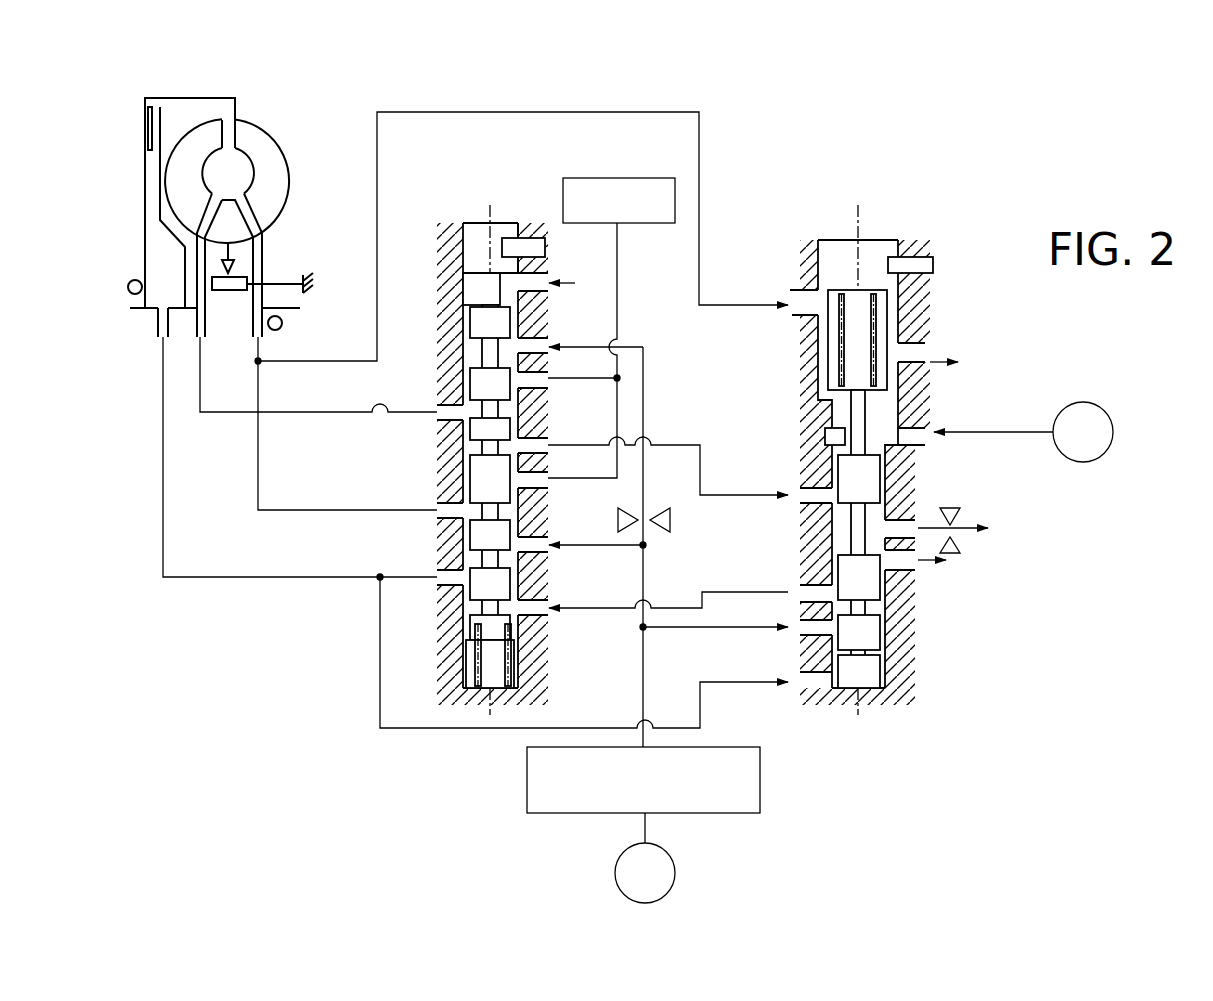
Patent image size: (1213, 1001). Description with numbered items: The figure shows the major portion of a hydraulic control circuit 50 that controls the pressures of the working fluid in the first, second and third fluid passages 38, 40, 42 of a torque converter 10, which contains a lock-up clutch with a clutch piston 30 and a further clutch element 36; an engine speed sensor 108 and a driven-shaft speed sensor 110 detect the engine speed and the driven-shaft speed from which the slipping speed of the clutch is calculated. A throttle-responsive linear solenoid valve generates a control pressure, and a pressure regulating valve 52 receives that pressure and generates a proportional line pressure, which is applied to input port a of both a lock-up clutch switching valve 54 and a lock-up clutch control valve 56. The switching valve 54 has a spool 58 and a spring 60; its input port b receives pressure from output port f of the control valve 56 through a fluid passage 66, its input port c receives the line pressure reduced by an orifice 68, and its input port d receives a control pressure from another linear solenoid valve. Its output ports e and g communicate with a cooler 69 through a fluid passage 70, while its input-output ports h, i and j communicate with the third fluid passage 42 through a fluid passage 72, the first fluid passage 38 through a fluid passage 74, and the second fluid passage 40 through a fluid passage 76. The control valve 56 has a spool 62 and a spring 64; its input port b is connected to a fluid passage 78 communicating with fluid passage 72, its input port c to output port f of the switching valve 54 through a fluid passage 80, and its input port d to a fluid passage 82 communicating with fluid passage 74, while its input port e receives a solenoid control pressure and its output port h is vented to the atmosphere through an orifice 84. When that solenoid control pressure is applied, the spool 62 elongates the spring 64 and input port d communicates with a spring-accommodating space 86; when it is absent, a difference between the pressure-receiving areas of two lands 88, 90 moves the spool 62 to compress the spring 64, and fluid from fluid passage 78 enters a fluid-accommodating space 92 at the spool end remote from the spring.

The torque converter 10 is at (270, 80).
The clutch piston 30 is at (162, 124).
The lock-up clutch element 36 is at (150, 137).
The first fluid passage 38 is at (258, 258).
The second fluid passage 40 is at (207, 322).
The third fluid passage 42 is at (160, 237).
The hydraulic control circuit 50 is at (762, 88).
The pressure regulating valve 52 is at (757, 770).
The lock-up clutch switching valve 54 is at (489, 428).
The lock-up clutch control valve 56 is at (851, 443).
The spool 58 is at (475, 292).
The spring 60 is at (470, 680).
The spool 62 is at (878, 688).
The spring 64 is at (874, 292).
The fluid passage 66 is at (672, 605).
The orifice 68 is at (659, 504).
The cooler 69 is at (619, 177).
The fluid passage 70 is at (622, 292).
The fluid passage 72 is at (207, 580).
The fluid passage 74 is at (292, 512).
The fluid passage 76 is at (224, 414).
The fluid passage 78 is at (503, 730).
The fluid passage 80 is at (700, 432).
The fluid passage 82 is at (655, 110).
The orifice 84 is at (967, 502).
The spring-accommodating space 86 is at (851, 296).
The land 88 is at (835, 387).
The land 90 is at (843, 433).
The fluid-accommodating space 92 is at (843, 688).
The engine speed sensor 108 is at (283, 326).
The driven-shaft speed sensor 110 is at (130, 294).